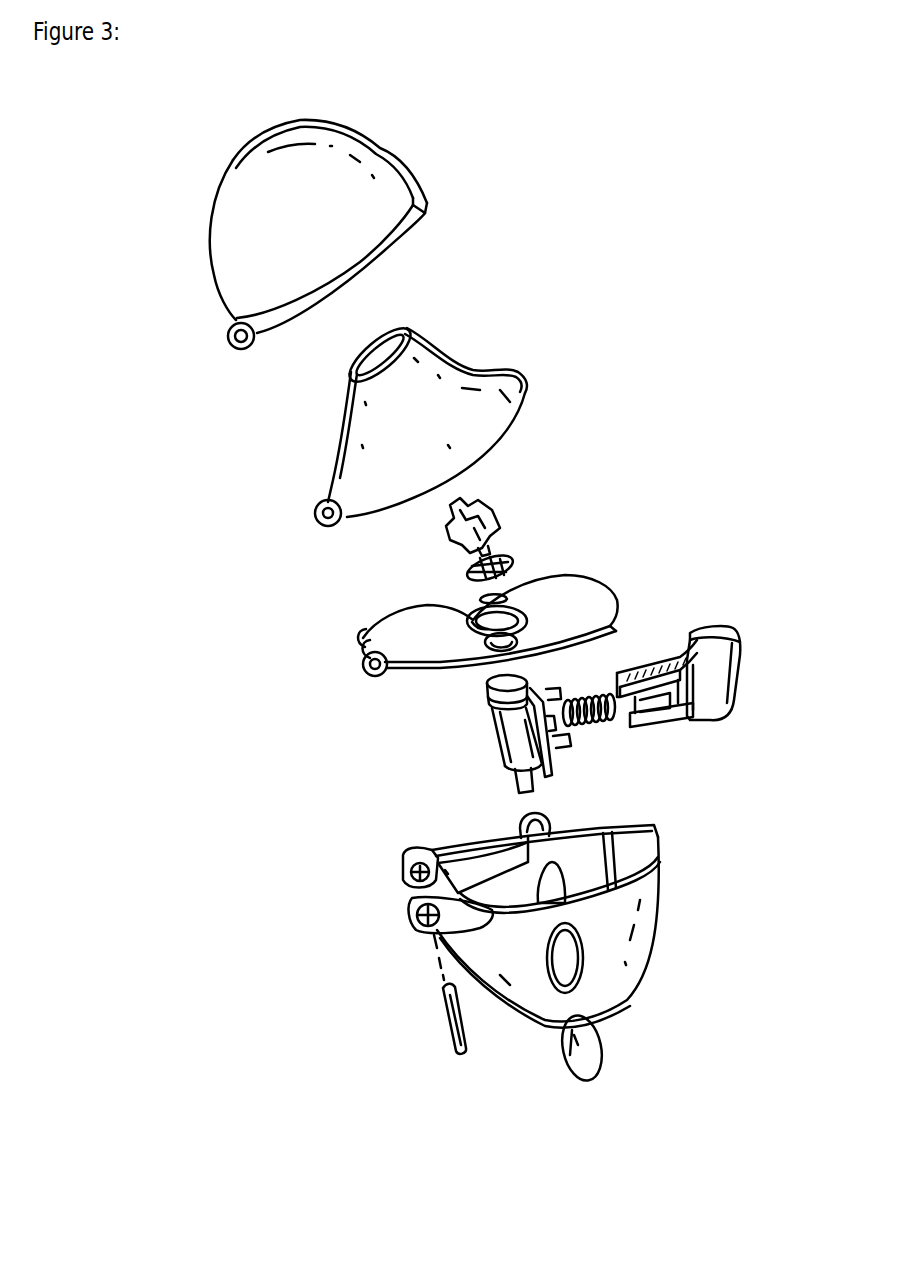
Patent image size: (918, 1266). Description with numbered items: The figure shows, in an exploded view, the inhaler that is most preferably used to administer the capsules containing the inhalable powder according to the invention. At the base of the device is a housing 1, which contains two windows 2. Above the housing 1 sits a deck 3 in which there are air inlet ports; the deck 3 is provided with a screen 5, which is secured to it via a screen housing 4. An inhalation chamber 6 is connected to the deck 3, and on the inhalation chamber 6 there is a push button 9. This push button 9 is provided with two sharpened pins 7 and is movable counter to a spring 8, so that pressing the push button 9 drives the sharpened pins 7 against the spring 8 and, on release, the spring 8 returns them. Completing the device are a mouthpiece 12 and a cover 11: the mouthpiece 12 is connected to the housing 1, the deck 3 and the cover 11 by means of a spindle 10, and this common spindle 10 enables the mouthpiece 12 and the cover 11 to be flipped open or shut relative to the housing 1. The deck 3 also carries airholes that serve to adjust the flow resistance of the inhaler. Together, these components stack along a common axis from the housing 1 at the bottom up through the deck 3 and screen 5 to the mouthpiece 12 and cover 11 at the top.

The housing 1 is at (642, 915).
The windows 2 is at (563, 1053).
The deck 3 is at (438, 644).
The screen housing 4 is at (505, 527).
The screen 5 is at (466, 576).
The inhalation chamber 6 is at (500, 752).
The sharpened pins 7 is at (640, 672).
The spring 8 is at (596, 725).
The push button 9 is at (715, 690).
The spindle 10 is at (445, 1013).
The cover 11 is at (370, 168).
The mouthpiece 12 is at (348, 452).